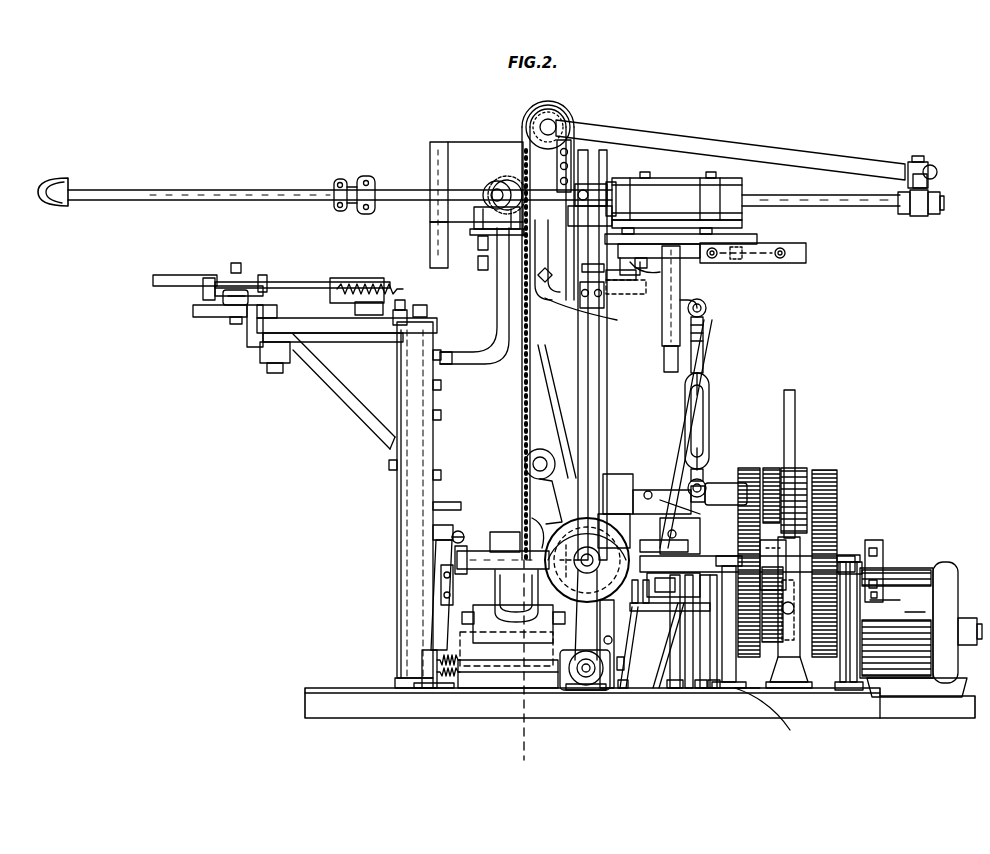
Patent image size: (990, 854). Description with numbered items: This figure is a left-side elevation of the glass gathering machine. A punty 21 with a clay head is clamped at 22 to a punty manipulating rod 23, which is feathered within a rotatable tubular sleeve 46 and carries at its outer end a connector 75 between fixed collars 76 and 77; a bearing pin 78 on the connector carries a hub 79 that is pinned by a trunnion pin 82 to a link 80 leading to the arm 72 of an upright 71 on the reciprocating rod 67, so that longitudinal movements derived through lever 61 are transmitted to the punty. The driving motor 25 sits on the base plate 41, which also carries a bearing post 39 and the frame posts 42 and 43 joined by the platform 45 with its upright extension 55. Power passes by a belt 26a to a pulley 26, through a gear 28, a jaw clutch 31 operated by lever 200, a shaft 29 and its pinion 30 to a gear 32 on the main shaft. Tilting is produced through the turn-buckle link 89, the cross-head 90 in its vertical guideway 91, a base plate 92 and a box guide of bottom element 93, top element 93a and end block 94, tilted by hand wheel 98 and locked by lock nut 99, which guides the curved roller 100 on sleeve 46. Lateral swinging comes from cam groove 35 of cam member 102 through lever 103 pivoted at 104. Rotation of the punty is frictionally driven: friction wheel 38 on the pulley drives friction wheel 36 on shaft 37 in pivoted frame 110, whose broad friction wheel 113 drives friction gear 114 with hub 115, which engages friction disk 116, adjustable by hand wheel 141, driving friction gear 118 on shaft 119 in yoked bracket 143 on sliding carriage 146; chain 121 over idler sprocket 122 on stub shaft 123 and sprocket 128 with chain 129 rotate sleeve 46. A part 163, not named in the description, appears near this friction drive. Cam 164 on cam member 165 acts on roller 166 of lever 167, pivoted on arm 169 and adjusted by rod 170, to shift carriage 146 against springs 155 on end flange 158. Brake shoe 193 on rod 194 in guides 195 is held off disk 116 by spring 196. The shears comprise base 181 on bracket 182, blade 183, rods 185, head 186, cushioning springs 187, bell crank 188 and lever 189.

The punty 21 is at (112, 190).
The clamp 22 is at (350, 180).
The punty manipulating rod 23 is at (404, 190).
The driving motor 25 is at (921, 629).
The pulley 26 is at (837, 500).
The belt 26a is at (806, 470).
The gear 28 is at (837, 512).
The shaft 29 is at (884, 566).
The pinion 30 is at (800, 560).
The jaw clutch 31 is at (887, 564).
The gear 32 is at (750, 468).
The cam groove 35 is at (534, 512).
The friction wheel 36 is at (774, 470).
The shaft 37 is at (718, 484).
The friction wheel 38 is at (775, 640).
The bearing post 39 is at (763, 717).
The base plate 41 is at (400, 715).
The supporting post 42 is at (410, 496).
The supporting post 43 is at (607, 392).
The supporting head or platform 45 is at (496, 314).
The tubular sleeve or punty support 46 is at (660, 190).
The upright extension 55 is at (587, 274).
The lever 61 is at (676, 408).
The rod or bar 67 is at (800, 253).
The upright 71 is at (430, 224).
The arm 72 is at (462, 150).
The connector 75 is at (919, 216).
The fixed collar 76 is at (902, 214).
The fixed collar 77 is at (934, 214).
The bearing pin 78 is at (922, 162).
The hub 79 is at (930, 182).
The link 80 is at (816, 158).
The trunnion pin 82 is at (937, 172).
The adjustable link 89 is at (709, 404).
The cross-head 90 is at (664, 356).
The vertical guideway 91 is at (703, 326).
The base plate 92 is at (757, 239).
The bottom element 93 is at (700, 226).
The top element 93a is at (626, 182).
The end block 94 is at (590, 194).
The hand wheel 98 is at (613, 286).
The lock nut 99 is at (655, 253).
The curved roller 100 is at (744, 190).
The cam member 102 is at (504, 532).
The lever 103 is at (550, 396).
The pivot 104 is at (533, 464).
The frame 110 is at (655, 490).
The friction wheel 113 is at (612, 472).
The friction gear 114 is at (644, 514).
The hub 115 is at (624, 560).
The friction disk 116 is at (587, 560).
The friction gear 118 is at (582, 519).
The shaft 119 is at (457, 560).
The chain 121 is at (521, 432).
The idler sprocket 122 is at (560, 98).
The stub shaft 123 is at (570, 138).
The sprocket 128 is at (496, 197).
The chain 129 is at (508, 176).
The hand wheel 141 is at (578, 690).
The yoked bracket 143 is at (513, 606).
The sliding carriage 146 is at (512, 644).
The spring 155 is at (448, 690).
The end flange 158 is at (422, 660).
The plate 163 is at (670, 557).
The cam 164 is at (458, 530).
The cam member 165 is at (397, 522).
The roller 166 is at (477, 548).
The lever 167 is at (440, 620).
The supporting arm 169 is at (441, 585).
The connecting rod 170 is at (526, 660).
The adjustable base 181 is at (204, 318).
The bracket 182 is at (360, 343).
The shear blade 183 is at (176, 282).
The rod 185 is at (296, 283).
The head 186 is at (348, 280).
The cushioning spring 187 is at (380, 288).
The bell crank lever 188 is at (404, 300).
The lever 189 is at (395, 446).
The brake shoe 193 is at (614, 644).
The rod 194 is at (672, 690).
The guide 195 is at (640, 690).
The spring 196 is at (706, 690).
The lever 200 is at (796, 410).